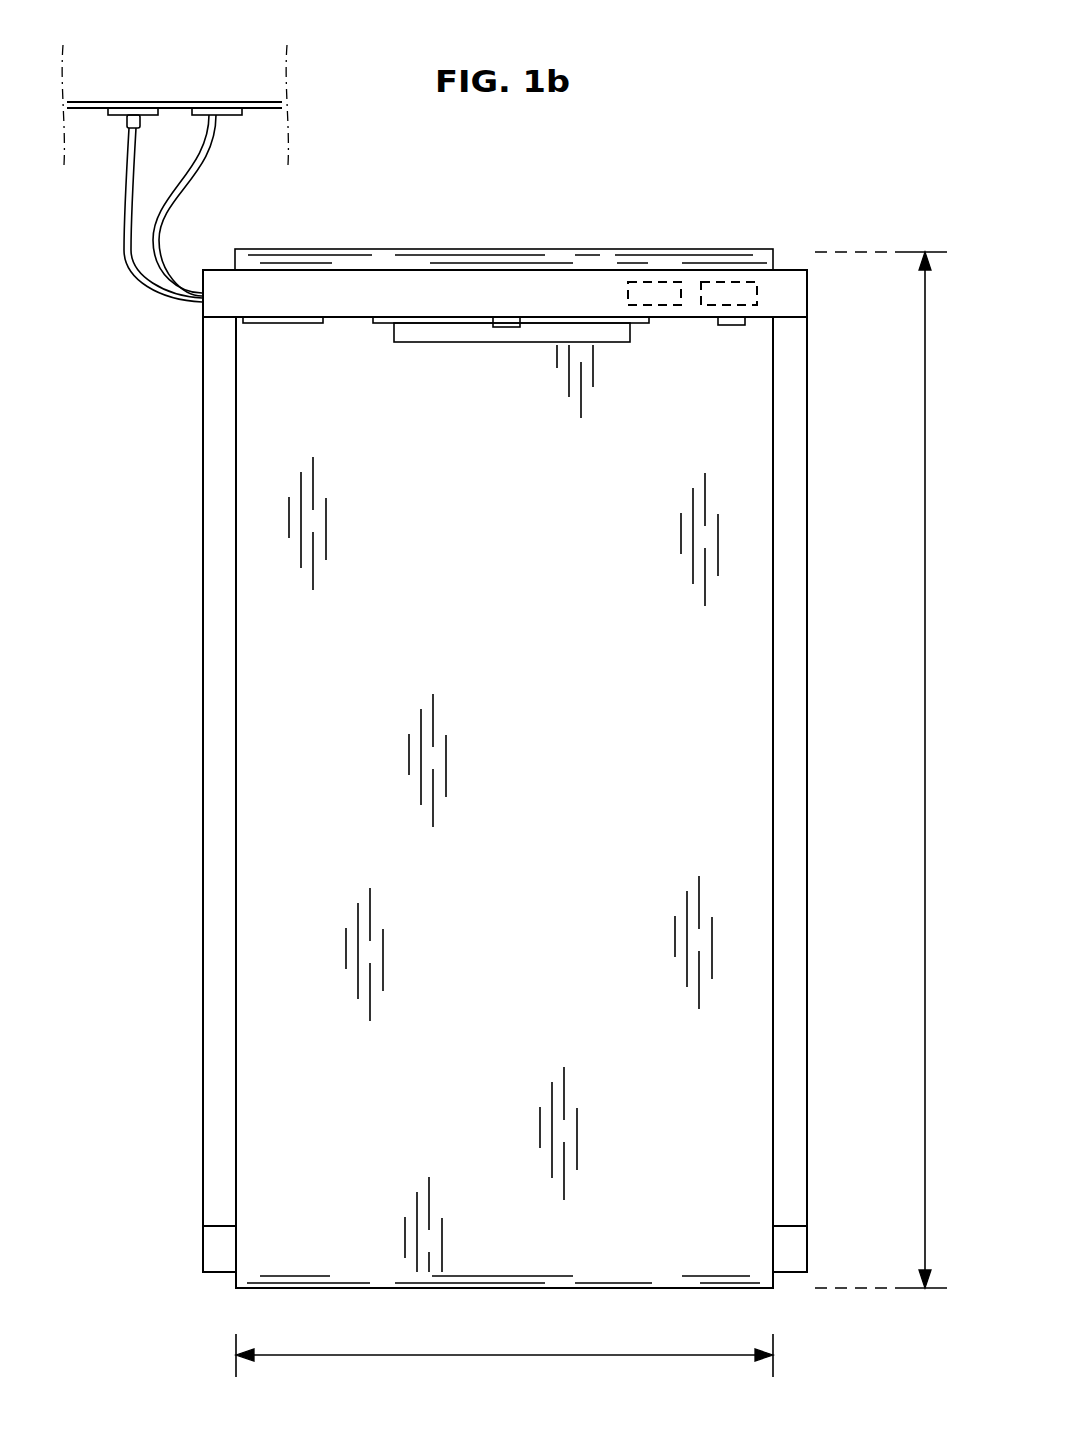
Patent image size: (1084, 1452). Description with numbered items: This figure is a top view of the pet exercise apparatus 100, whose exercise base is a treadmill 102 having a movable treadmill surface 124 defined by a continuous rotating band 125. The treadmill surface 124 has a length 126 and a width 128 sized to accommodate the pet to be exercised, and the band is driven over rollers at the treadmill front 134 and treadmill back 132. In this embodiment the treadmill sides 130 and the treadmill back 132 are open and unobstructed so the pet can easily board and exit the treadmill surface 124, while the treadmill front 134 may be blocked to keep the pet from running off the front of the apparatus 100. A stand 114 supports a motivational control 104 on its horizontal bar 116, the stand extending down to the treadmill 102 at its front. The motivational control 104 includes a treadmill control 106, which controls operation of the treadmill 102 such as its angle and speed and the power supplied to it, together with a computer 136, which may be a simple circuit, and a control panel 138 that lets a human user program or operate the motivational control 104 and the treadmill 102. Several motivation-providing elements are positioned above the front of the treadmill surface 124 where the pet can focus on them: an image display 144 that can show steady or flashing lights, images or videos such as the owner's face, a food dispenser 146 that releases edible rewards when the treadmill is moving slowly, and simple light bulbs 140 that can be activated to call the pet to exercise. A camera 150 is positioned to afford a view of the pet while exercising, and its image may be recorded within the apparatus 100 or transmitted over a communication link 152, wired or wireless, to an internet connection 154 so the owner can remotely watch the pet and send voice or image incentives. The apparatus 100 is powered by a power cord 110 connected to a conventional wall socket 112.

The exercise apparatus 100 is at (770, 136).
The treadmill 102 is at (246, 948).
The motivational control 104 is at (725, 282).
The treadmill control 106 is at (645, 282).
The power cord 110 is at (134, 287).
The wall socket 112 is at (118, 108).
The stand 114 is at (807, 295).
The horizontal bar 116 is at (290, 282).
The treadmill surface 124 is at (262, 636).
The continuous rotating band 125 is at (369, 248).
The length 126 is at (925, 748).
The width 128 is at (418, 1355).
The treadmill sides 130 is at (220, 855).
The treadmill back 132 is at (518, 1290).
The treadmill front 134 is at (440, 248).
The computer 136 is at (745, 282).
The control panel 138 is at (283, 323).
The light bulbs 140 is at (732, 325).
The image display 144 is at (606, 323).
The food dispenser 146 is at (437, 342).
The camera 150 is at (507, 327).
The communication link 152 is at (158, 228).
The internet connection 154 is at (205, 108).